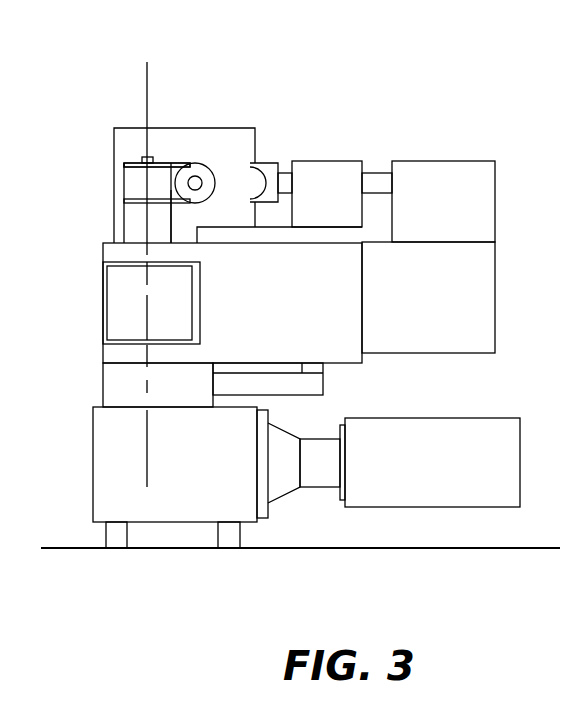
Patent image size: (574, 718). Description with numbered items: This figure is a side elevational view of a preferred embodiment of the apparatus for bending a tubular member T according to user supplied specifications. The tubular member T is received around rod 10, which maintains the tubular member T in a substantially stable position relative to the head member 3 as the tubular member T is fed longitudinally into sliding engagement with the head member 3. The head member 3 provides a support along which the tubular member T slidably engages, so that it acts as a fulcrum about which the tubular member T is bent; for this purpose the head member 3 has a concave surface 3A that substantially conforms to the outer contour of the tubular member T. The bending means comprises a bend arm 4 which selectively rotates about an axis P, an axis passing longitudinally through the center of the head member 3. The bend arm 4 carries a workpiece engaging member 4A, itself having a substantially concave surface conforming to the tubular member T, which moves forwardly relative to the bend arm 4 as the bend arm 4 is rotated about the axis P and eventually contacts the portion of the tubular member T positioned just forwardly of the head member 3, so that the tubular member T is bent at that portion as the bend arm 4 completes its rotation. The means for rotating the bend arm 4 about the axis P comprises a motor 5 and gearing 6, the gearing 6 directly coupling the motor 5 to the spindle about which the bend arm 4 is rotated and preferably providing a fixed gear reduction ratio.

The axis P is at (144, 257).
The tubular member T is at (182, 163).
The rod 10 is at (198, 172).
The workpiece engaging member 4A is at (272, 162).
The bend arm 4 is at (335, 180).
The head member 3 is at (132, 181).
The concave surface 3A is at (171, 190).
The gearing 6 is at (112, 448).
The motor 5 is at (445, 491).